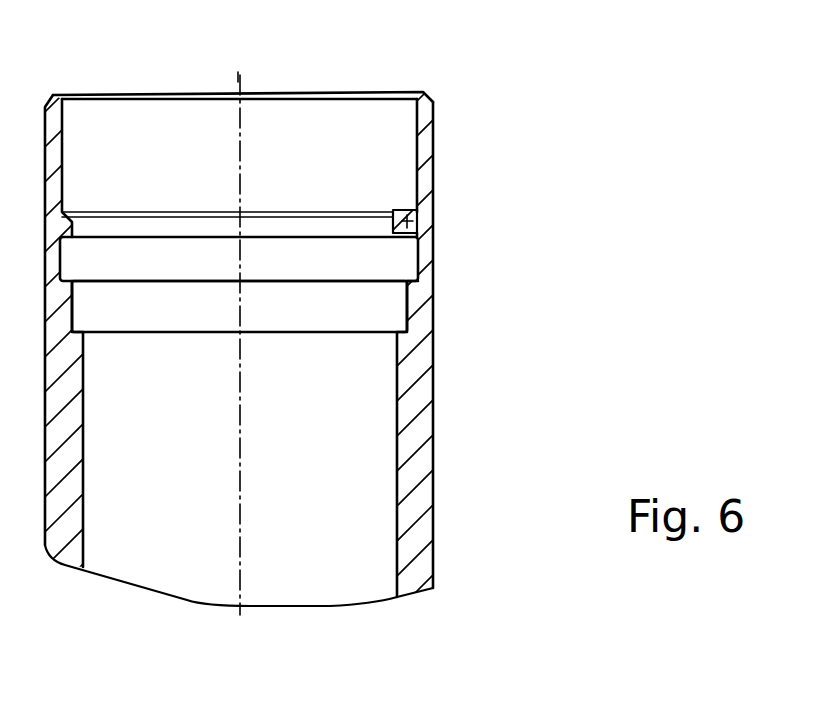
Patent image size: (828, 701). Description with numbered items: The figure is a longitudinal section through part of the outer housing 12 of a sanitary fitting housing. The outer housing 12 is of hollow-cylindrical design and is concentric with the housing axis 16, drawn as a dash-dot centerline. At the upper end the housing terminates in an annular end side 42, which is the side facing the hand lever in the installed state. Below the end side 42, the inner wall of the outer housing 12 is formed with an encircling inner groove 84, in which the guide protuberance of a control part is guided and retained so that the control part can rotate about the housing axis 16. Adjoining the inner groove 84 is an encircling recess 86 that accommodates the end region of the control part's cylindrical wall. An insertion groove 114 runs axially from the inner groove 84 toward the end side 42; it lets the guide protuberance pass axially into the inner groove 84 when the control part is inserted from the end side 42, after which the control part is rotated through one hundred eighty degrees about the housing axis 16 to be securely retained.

The outer housing 12 is at (433, 400).
The housing axis 16 is at (238, 80).
The end side 42 is at (423, 90).
The inner groove 84 is at (420, 250).
The recess 86 is at (407, 307).
The insertion groove 114 is at (413, 217).